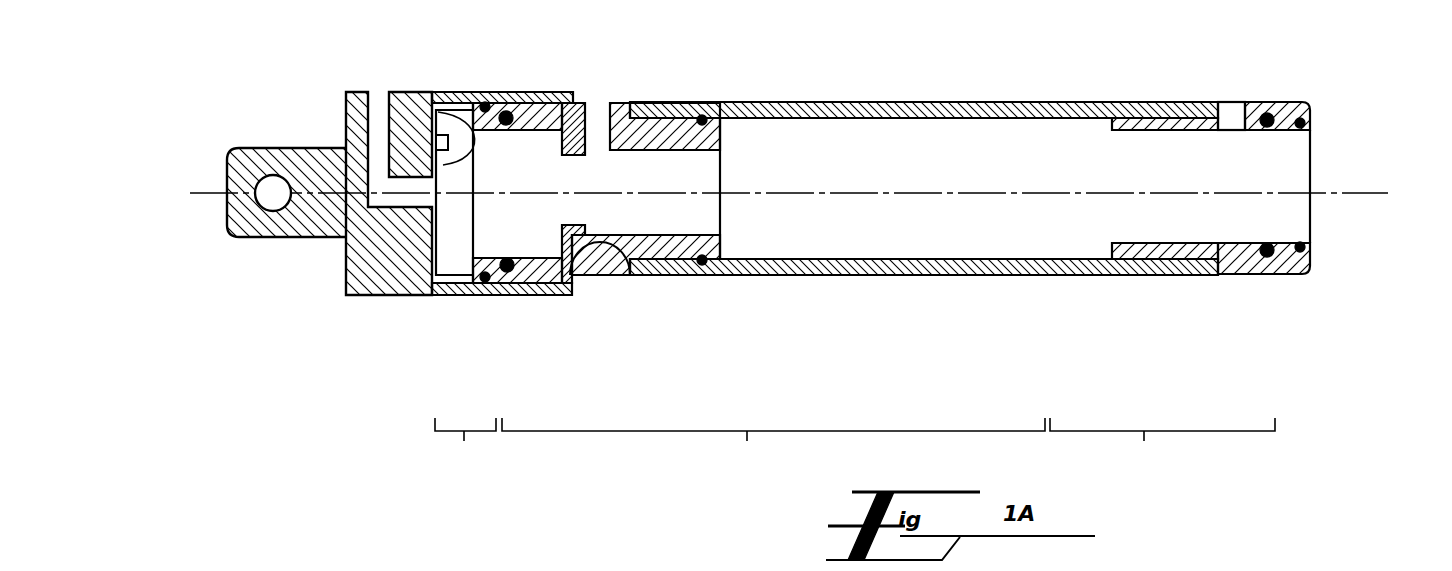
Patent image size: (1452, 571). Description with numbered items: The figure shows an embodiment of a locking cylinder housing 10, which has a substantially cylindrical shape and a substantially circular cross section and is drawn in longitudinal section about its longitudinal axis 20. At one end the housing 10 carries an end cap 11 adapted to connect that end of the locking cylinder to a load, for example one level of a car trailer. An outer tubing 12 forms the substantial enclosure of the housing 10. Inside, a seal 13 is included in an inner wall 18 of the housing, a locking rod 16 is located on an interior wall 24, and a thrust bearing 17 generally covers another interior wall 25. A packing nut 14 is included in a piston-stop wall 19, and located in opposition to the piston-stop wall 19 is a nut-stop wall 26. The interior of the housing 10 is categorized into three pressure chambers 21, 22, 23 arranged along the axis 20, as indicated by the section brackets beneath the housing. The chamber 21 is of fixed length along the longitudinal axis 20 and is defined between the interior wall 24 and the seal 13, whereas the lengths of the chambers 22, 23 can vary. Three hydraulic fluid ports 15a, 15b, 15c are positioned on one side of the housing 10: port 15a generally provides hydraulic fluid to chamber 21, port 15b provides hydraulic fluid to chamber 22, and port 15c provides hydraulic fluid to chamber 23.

The locking cylinder housing 10 is at (293, 319).
The end cap 11 is at (255, 147).
The outer tubing 12 is at (1028, 101).
The seal 13 is at (506, 116).
The packing nut 14 is at (1282, 102).
The hydraulic fluid port 15a is at (378, 91).
The hydraulic fluid port 15b is at (605, 103).
The hydraulic fluid port 15c is at (1225, 102).
The locking rod 16 is at (438, 109).
The thrust bearing 17 is at (574, 103).
The inner wall 18 is at (487, 105).
The piston-stop wall 19 is at (1172, 102).
The longitudinal axis 20 is at (1352, 193).
The pressure chamber 21 is at (465, 446).
The pressure chamber 22 is at (773, 446).
The pressure chamber 23 is at (1162, 446).
The interior wall 24 is at (447, 108).
The interior wall 25 is at (637, 270).
The nut-stop wall 26 is at (688, 103).